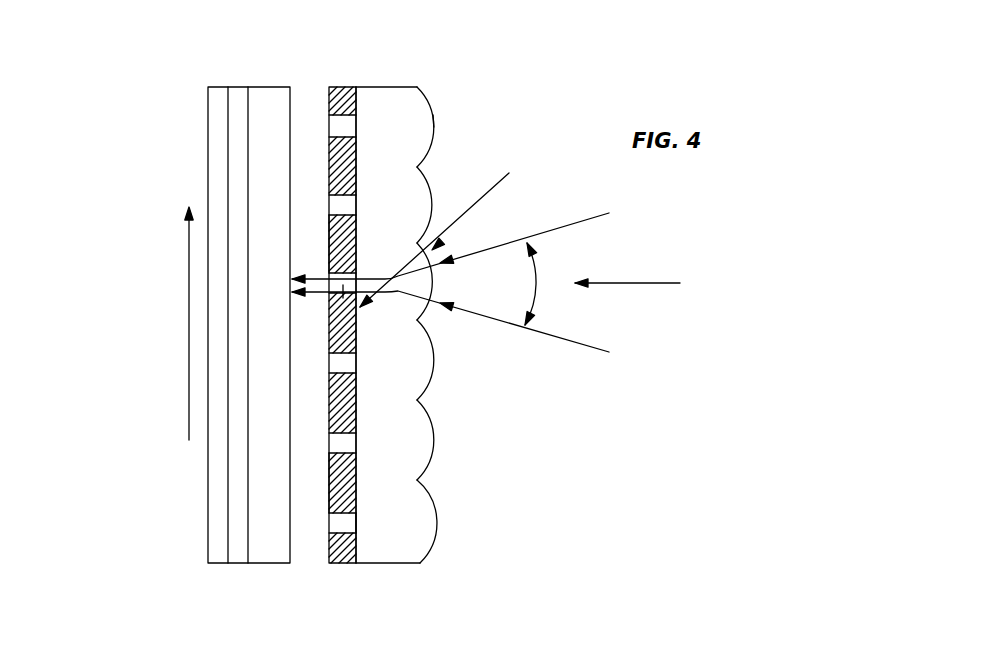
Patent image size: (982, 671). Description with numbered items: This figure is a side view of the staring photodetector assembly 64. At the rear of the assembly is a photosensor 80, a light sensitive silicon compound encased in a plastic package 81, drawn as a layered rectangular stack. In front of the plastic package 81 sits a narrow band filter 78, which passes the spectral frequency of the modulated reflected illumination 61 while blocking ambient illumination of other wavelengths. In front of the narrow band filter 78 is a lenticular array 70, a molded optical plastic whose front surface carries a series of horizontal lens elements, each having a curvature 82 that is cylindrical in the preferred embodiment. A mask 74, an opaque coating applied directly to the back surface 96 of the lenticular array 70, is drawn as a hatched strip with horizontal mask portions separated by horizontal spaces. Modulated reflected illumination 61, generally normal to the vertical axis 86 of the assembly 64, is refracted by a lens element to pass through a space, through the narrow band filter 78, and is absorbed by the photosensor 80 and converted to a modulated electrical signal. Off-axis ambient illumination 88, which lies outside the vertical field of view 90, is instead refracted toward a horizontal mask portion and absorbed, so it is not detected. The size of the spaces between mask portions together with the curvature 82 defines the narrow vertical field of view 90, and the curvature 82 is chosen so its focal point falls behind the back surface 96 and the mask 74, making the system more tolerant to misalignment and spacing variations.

The modulated reflected illumination 61 is at (640, 283).
The staring photodetector assembly 64 is at (385, 50).
The lenticular array 70 is at (400, 87).
The mask 74 is at (338, 85).
The narrow band filter 78 is at (268, 93).
The photosensor 80 is at (229, 110).
The plastic package 81 is at (215, 106).
The curvature 82 is at (433, 123).
The vertical axis 86 is at (188, 247).
The off-axis ambient illumination 88 is at (483, 196).
The vertical field of view 90 is at (540, 268).
The back surface 96 is at (358, 522).